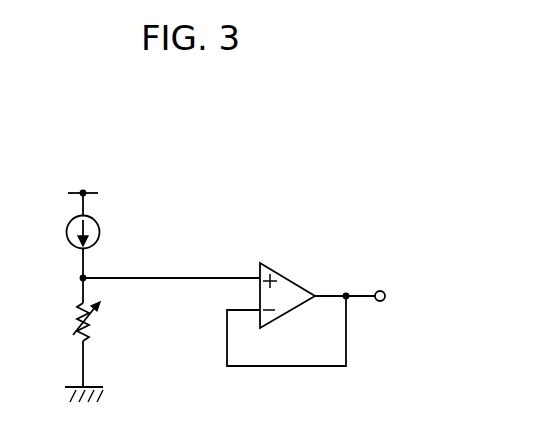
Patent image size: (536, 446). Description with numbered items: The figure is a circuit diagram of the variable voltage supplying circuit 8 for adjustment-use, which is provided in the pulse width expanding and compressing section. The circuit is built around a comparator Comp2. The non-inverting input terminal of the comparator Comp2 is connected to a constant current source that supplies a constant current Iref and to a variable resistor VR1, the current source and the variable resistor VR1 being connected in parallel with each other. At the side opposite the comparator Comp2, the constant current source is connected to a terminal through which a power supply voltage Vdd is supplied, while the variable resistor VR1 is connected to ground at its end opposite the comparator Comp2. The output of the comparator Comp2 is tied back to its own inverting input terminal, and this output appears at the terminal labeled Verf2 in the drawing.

The variable voltage supplying circuit 8 is at (217, 158).
The power supply voltage Vdd is at (82, 182).
The constant current Iref is at (101, 230).
The variable resistor VR1 is at (96, 322).
The comparator Comp2 is at (278, 268).
The reference voltage output Verf2 is at (359, 285).